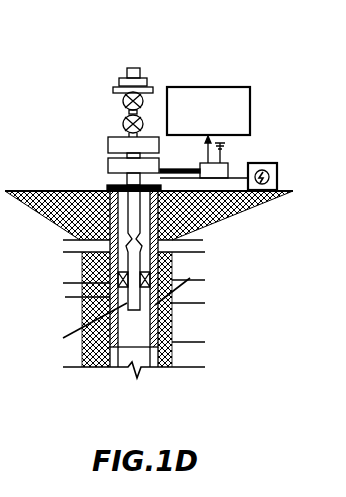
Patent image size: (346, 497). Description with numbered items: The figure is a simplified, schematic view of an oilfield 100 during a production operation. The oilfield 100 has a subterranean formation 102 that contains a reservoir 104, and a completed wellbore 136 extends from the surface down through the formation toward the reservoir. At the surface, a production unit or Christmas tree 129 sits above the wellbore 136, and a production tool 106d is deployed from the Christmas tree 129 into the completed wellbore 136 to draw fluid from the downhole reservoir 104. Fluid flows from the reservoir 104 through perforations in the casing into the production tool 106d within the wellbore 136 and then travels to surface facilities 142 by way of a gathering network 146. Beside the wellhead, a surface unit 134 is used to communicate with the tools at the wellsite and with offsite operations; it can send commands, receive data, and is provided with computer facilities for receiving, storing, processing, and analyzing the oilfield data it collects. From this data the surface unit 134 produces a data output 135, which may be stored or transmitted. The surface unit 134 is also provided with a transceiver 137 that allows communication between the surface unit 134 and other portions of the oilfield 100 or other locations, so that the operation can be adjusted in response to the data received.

The oilfield 100 is at (68, 118).
The subterranean formation 102 is at (190, 273).
The reservoir 104 is at (213, 331).
The production tool 106d is at (85, 318).
The production unit or Christmas tree 129 is at (133, 68).
The surface unit 134 is at (202, 163).
The data output 135 is at (233, 86).
The wellbore 136 is at (148, 215).
The transceiver 137 is at (223, 162).
The surface facilities 142 is at (278, 173).
The gathering network 146 is at (242, 208).